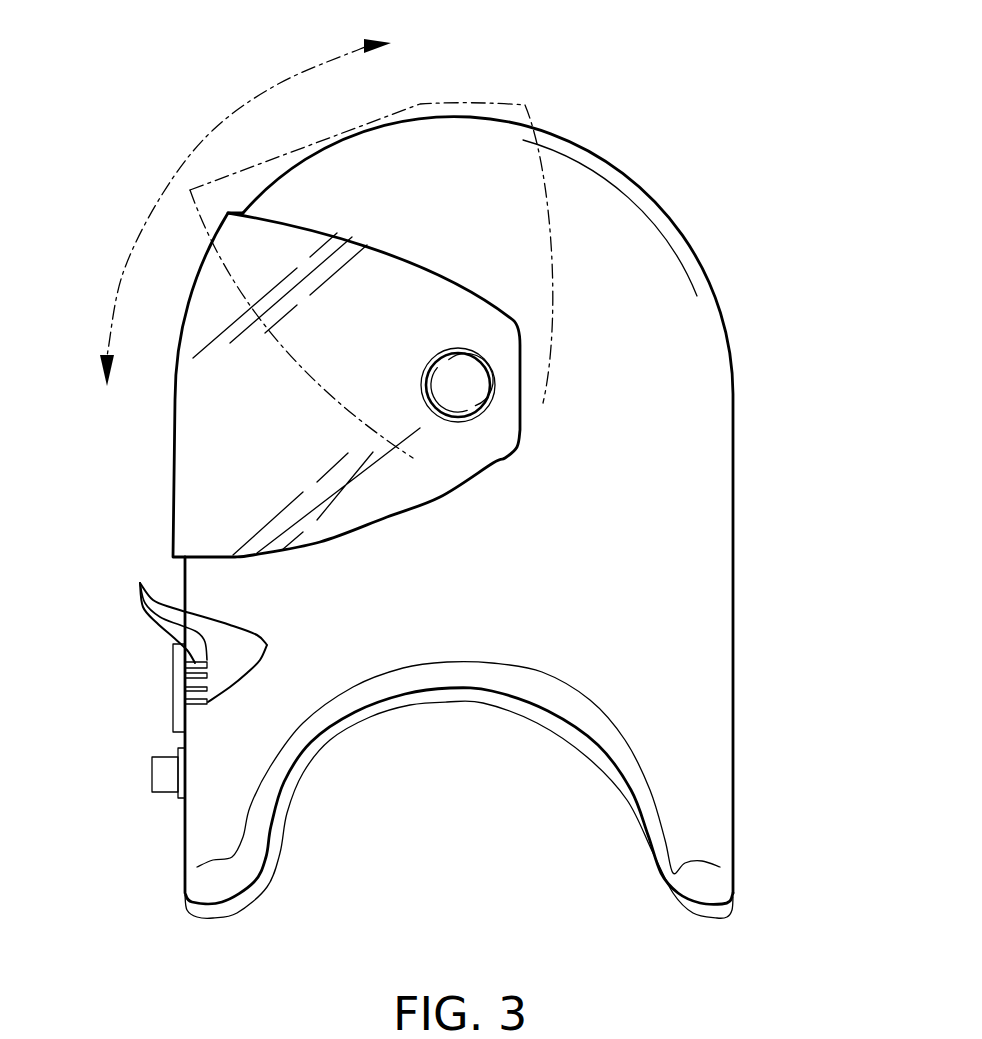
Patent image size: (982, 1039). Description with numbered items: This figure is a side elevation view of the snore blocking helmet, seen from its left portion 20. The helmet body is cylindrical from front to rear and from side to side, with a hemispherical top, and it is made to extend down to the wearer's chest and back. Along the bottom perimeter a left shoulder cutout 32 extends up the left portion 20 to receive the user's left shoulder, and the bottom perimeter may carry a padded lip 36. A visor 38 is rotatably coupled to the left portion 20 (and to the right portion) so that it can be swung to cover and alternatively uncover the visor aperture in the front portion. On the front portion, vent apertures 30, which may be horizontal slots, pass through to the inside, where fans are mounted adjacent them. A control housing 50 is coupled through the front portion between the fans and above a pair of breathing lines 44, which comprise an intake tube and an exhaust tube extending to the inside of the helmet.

The left portion 20 is at (613, 590).
The plurality of vent apertures 30 is at (140, 583).
The left shoulder cutout 32 is at (460, 685).
The padded lip 36 is at (673, 895).
The visor 38 is at (188, 338).
The pair of breathing lines 44 is at (158, 777).
The control housing 50 is at (173, 688).